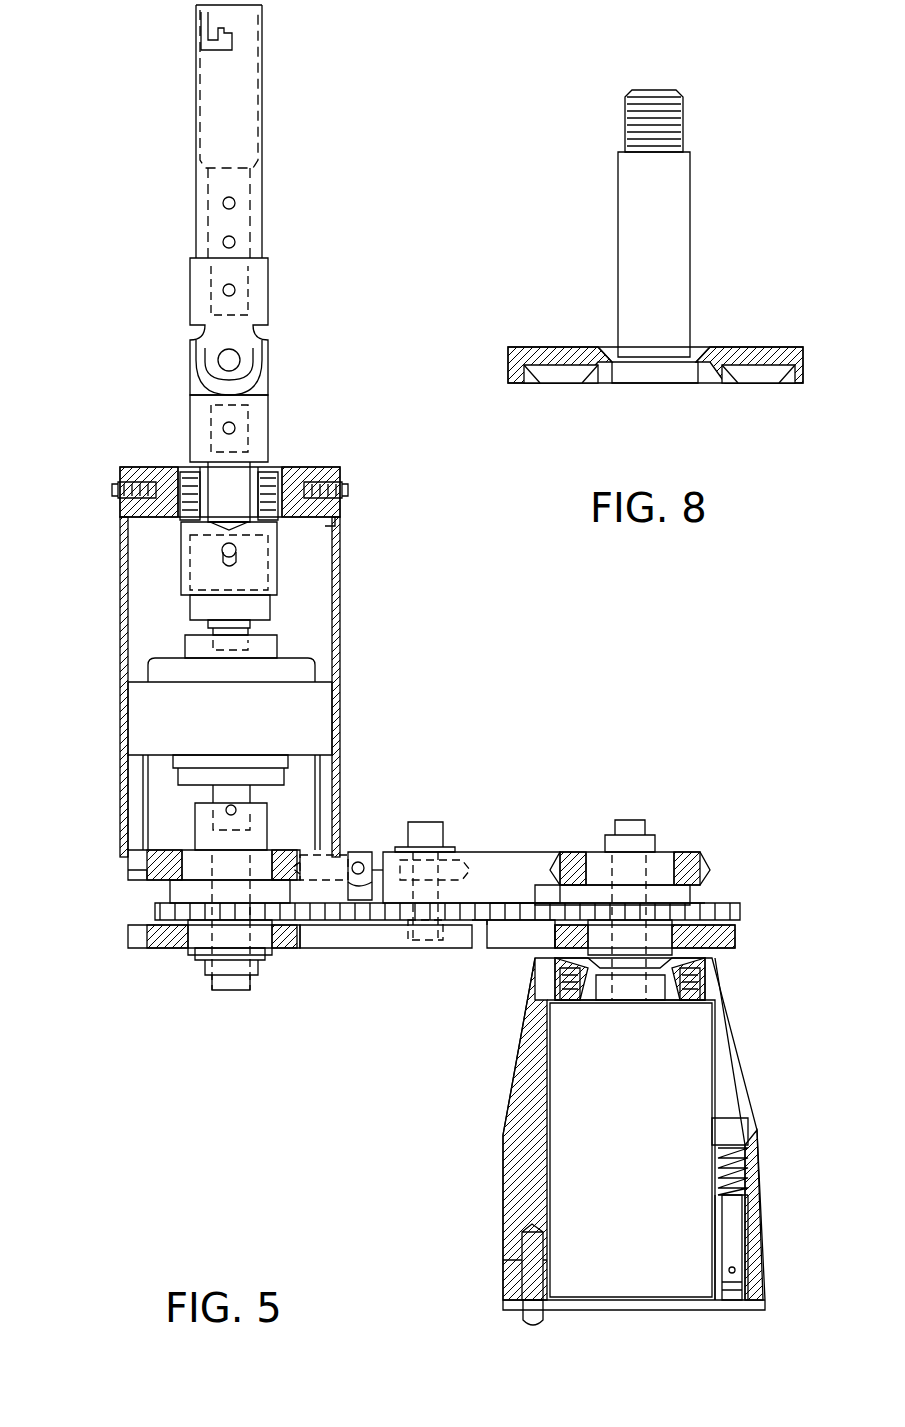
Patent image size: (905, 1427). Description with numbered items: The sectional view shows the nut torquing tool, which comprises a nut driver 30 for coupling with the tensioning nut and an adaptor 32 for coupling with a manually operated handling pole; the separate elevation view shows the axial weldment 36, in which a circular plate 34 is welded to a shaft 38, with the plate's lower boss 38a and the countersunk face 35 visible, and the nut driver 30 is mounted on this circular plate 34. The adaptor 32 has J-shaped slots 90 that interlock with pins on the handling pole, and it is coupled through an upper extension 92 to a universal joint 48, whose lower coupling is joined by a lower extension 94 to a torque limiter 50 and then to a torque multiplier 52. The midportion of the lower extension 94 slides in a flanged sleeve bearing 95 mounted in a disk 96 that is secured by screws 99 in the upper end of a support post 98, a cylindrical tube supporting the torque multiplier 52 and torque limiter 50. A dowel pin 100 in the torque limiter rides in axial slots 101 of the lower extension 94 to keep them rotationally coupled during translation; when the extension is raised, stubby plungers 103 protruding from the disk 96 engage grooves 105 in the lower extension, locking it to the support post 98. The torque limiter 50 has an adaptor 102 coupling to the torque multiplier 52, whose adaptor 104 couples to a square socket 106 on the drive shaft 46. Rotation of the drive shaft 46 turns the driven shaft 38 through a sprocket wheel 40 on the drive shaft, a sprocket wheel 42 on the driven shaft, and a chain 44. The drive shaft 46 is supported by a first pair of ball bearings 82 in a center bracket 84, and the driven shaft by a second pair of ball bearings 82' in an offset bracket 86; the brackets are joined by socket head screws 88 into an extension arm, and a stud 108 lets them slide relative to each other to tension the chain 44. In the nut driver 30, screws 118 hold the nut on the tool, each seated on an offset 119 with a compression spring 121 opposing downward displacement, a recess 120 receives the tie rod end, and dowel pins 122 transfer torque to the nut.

In FIG. 5, the nut driver 30 is at (510, 1062).
In FIG. 5, the adaptor 32 is at (262, 107).
In FIG. 5, the circular plate 34 is at (715, 946).
In FIG. 8, the circular plate 34 is at (710, 347).
In FIG. 8, the countersink 35 is at (705, 370).
In FIG. 8, the axial weldment 36 is at (702, 205).
In FIG. 5, the shaft 38 is at (640, 898).
In FIG. 8, the shaft 38 is at (618, 247).
In FIG. 8, the shaft flange 38a is at (645, 370).
In FIG. 5, the sprocket wheel 40 is at (175, 906).
In FIG. 5, the sprocket wheel 42 is at (688, 890).
In FIG. 5, the chain 44 is at (515, 900).
In FIG. 5, the drive shaft 46 is at (228, 990).
In FIG. 5, the universal joint 48 is at (292, 322).
In FIG. 5, the torque limiter 50 is at (270, 610).
In FIG. 5, the torque multiplier 52 is at (318, 716).
In FIG. 5, the ball bearings 82 is at (197, 920).
In FIG. 5, the ball bearings 82' is at (613, 900).
In FIG. 5, the center bracket 84 is at (320, 944).
In FIG. 5, the offset bracket 86 is at (505, 862).
In FIG. 5, the socket head screws 88 is at (425, 822).
In FIG. 5, the J-shaped slots 90 is at (228, 38).
In FIG. 5, the upper extension 92 is at (258, 210).
In FIG. 5, the lower extension 94 is at (277, 560).
In FIG. 5, the flanged sleeve bearing 95 is at (262, 468).
In FIG. 5, the disk 96 is at (162, 467).
In FIG. 5, the support post 98 is at (120, 610).
In FIG. 5, the screws 99 is at (112, 489).
In FIG. 5, the dowel pin 100 is at (222, 552).
In FIG. 5, the axial slots 101 is at (236, 565).
In FIG. 5, the adaptor 102 is at (255, 630).
In FIG. 5, the stubby plungers 103 is at (186, 520).
In FIG. 5, the adaptor 104 is at (285, 776).
In FIG. 5, the grooves 105 is at (343, 528).
In FIG. 5, the square socket 106 is at (195, 812).
In FIG. 5, the stud 108 is at (372, 858).
In FIG. 5, the screws 118 is at (730, 1240).
In FIG. 5, the offset 119 is at (722, 1200).
In FIG. 5, the axial circular cylindrical recess 120 is at (558, 1140).
In FIG. 5, the compression spring 121 is at (748, 1150).
In FIG. 5, the dowel pins 122 is at (520, 1312).